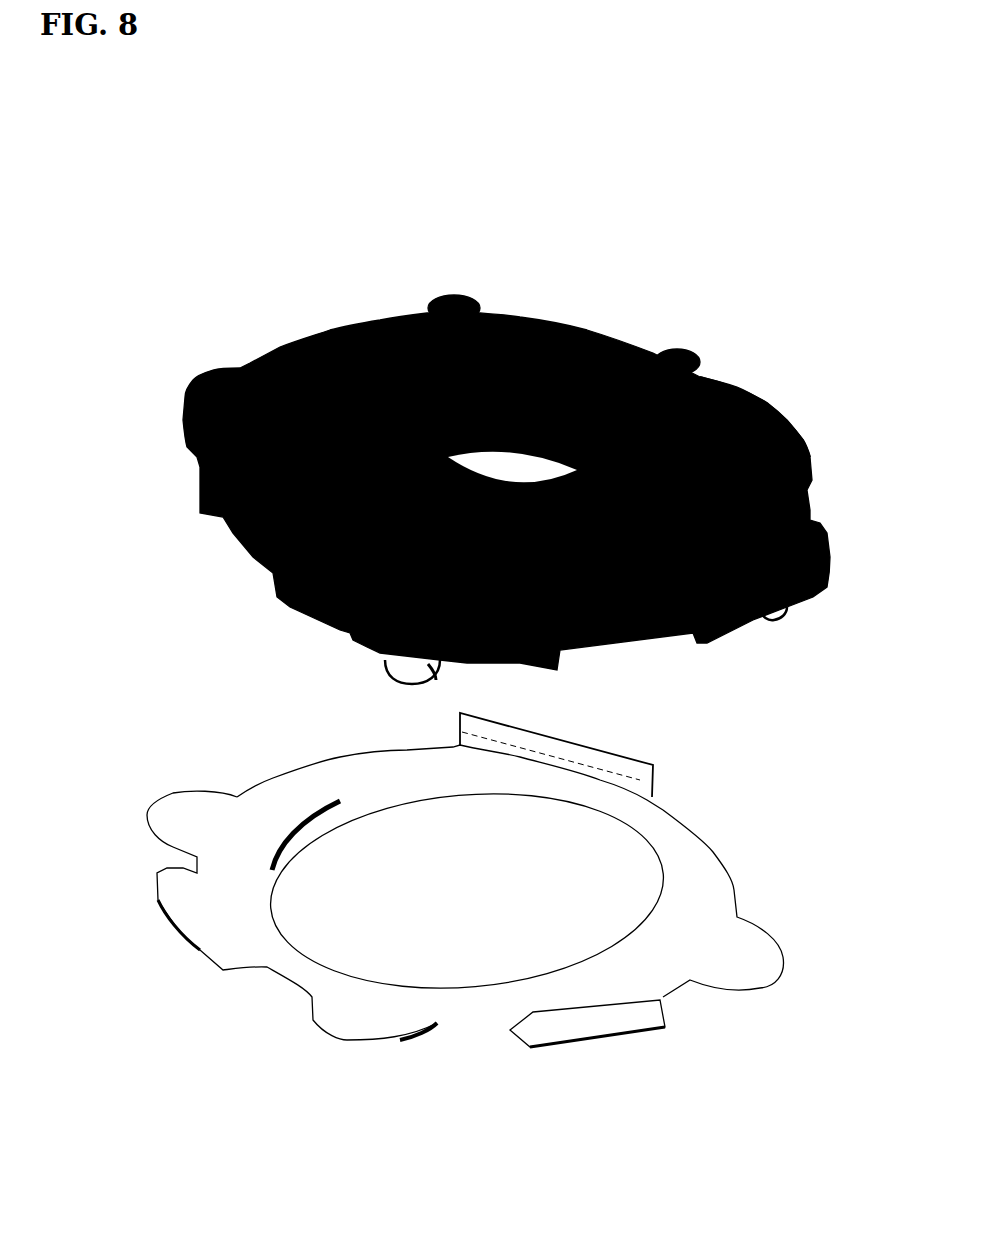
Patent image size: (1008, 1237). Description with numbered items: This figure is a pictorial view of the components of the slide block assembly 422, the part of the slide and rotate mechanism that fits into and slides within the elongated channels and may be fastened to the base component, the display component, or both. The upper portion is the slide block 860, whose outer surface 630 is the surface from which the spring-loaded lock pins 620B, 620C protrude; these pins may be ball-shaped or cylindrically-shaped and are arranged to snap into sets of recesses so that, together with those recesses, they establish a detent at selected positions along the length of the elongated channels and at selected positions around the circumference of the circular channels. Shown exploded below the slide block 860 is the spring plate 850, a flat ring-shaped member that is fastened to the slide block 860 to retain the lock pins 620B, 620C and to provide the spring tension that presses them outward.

The slide block assembly 422 is at (798, 119).
The surface 630 is at (807, 457).
The slide block 860 is at (783, 404).
The spring-loaded lock pin 620B is at (392, 668).
The spring-loaded lock pin 620C is at (777, 608).
The spring plate 850 is at (710, 852).